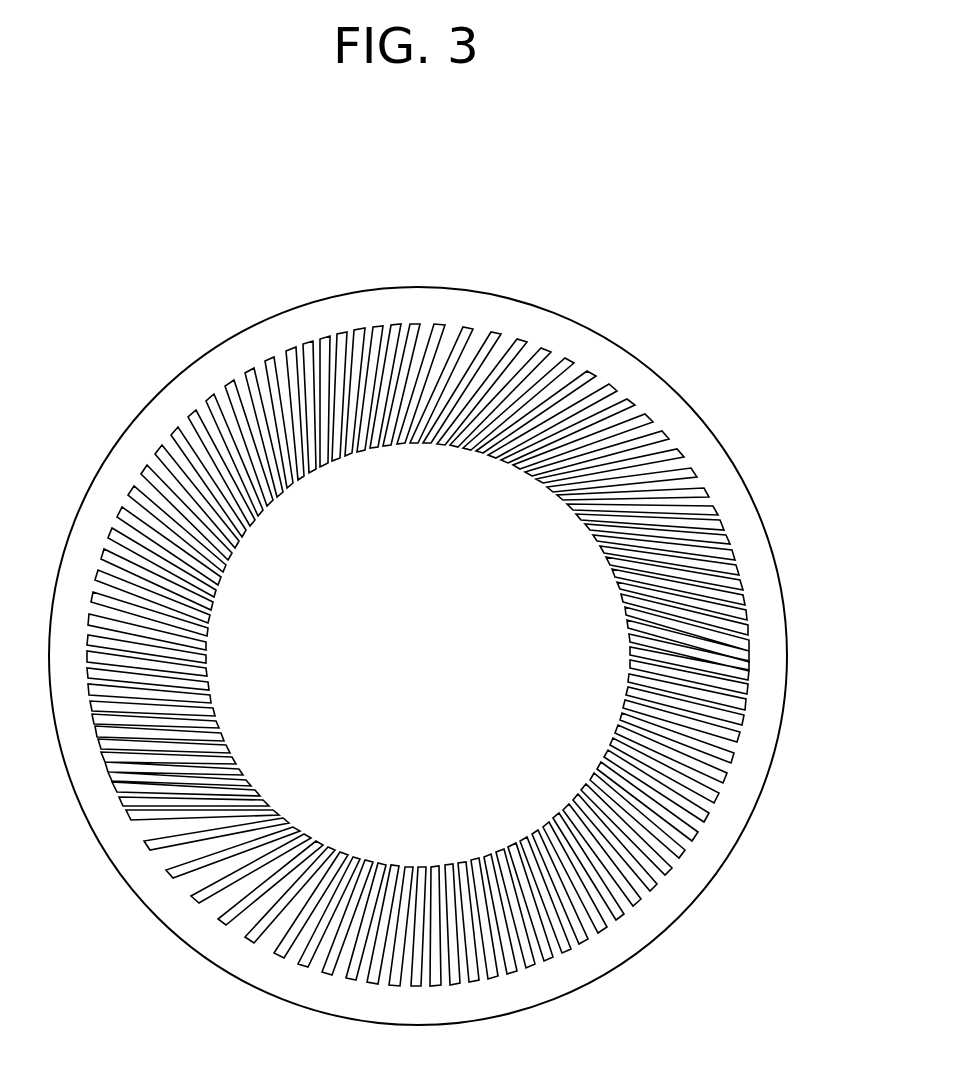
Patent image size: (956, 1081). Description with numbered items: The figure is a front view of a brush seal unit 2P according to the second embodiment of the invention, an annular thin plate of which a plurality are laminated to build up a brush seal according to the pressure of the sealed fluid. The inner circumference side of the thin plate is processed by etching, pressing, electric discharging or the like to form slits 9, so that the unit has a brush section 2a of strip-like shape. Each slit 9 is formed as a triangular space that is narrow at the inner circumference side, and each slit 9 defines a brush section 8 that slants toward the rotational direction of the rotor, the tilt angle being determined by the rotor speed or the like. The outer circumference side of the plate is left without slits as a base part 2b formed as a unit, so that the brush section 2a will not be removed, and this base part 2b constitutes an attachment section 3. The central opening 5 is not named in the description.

The brush seal unit 2P is at (601, 248).
The brush section 2a is at (623, 407).
The base part 2b is at (607, 353).
The attachment section 3 is at (501, 291).
The central opening 5 is at (469, 446).
The brush section 8 is at (660, 450).
The slit 9 is at (687, 650).